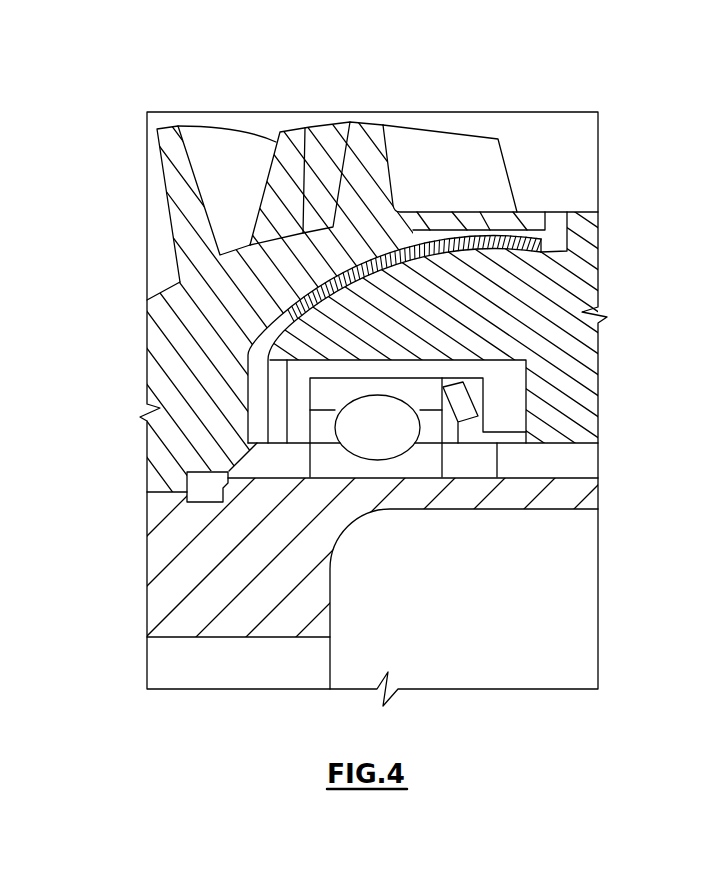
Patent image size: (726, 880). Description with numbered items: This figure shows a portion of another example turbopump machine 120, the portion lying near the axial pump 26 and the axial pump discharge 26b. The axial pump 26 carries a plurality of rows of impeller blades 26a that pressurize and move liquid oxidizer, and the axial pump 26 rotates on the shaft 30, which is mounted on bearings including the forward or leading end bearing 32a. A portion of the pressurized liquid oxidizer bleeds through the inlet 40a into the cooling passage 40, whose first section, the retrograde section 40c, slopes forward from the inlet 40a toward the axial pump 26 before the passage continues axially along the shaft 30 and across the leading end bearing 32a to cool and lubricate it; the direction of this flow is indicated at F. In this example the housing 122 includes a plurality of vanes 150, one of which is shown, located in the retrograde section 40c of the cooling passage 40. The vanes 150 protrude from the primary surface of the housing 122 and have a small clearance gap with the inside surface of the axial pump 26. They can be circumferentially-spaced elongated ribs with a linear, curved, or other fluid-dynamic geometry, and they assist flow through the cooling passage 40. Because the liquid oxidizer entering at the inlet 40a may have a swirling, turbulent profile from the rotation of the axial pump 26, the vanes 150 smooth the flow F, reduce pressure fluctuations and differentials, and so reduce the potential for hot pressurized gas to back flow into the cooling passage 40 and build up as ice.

The turbopump machine 120 is at (112, 685).
The housing 122 is at (577, 268).
The axial pump 26 is at (267, 165).
The impeller blades 26a is at (188, 150).
The axial pump discharge 26b is at (579, 148).
The cooling passage 40 is at (540, 430).
The inlet 40a is at (575, 199).
The retrograde section 40c is at (372, 296).
The vanes 150 is at (451, 240).
The shaft 30 is at (537, 477).
The leading end bearings 32a is at (414, 472).
The flow F is at (556, 216).